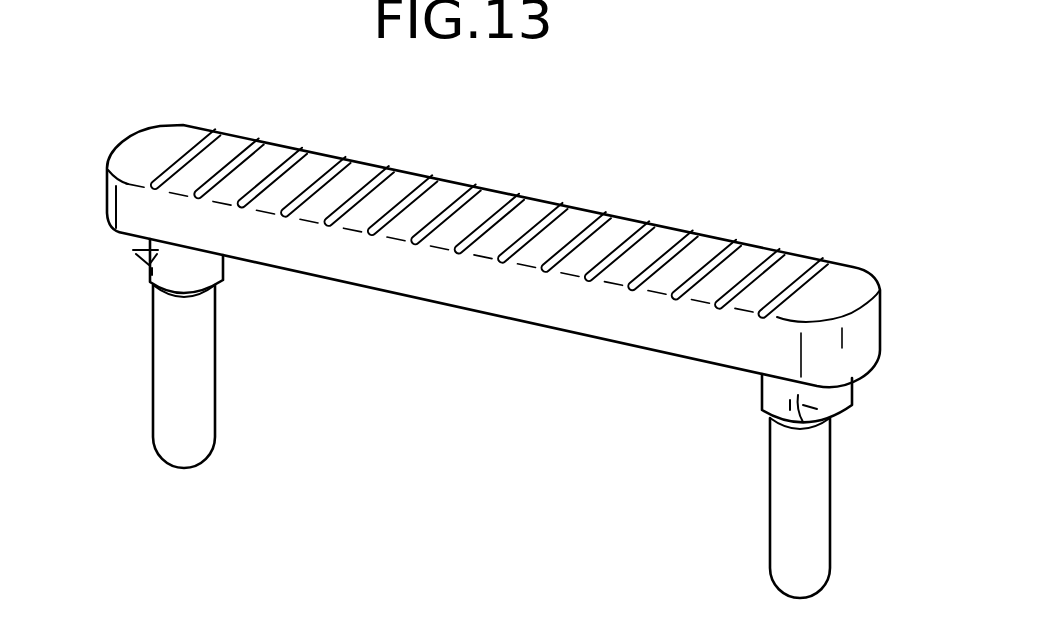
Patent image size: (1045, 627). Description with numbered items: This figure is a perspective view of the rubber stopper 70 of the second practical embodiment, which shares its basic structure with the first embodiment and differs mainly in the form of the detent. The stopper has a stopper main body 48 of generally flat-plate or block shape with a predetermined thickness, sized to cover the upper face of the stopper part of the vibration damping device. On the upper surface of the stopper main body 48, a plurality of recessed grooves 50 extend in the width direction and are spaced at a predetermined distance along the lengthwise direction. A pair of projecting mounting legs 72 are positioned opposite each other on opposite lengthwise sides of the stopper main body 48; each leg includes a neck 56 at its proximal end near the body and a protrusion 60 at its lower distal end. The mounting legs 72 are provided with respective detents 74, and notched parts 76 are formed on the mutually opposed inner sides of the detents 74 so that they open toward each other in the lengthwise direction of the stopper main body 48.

The stopper main body 48 is at (473, 293).
The recessed grooves 50 is at (373, 188).
The neck 56 is at (130, 248).
The protrusion 60 is at (197, 380).
The rubber stopper 70 is at (723, 160).
The mounting legs 72 is at (142, 352).
The detents 74 is at (137, 260).
The notched parts 76 is at (143, 268).